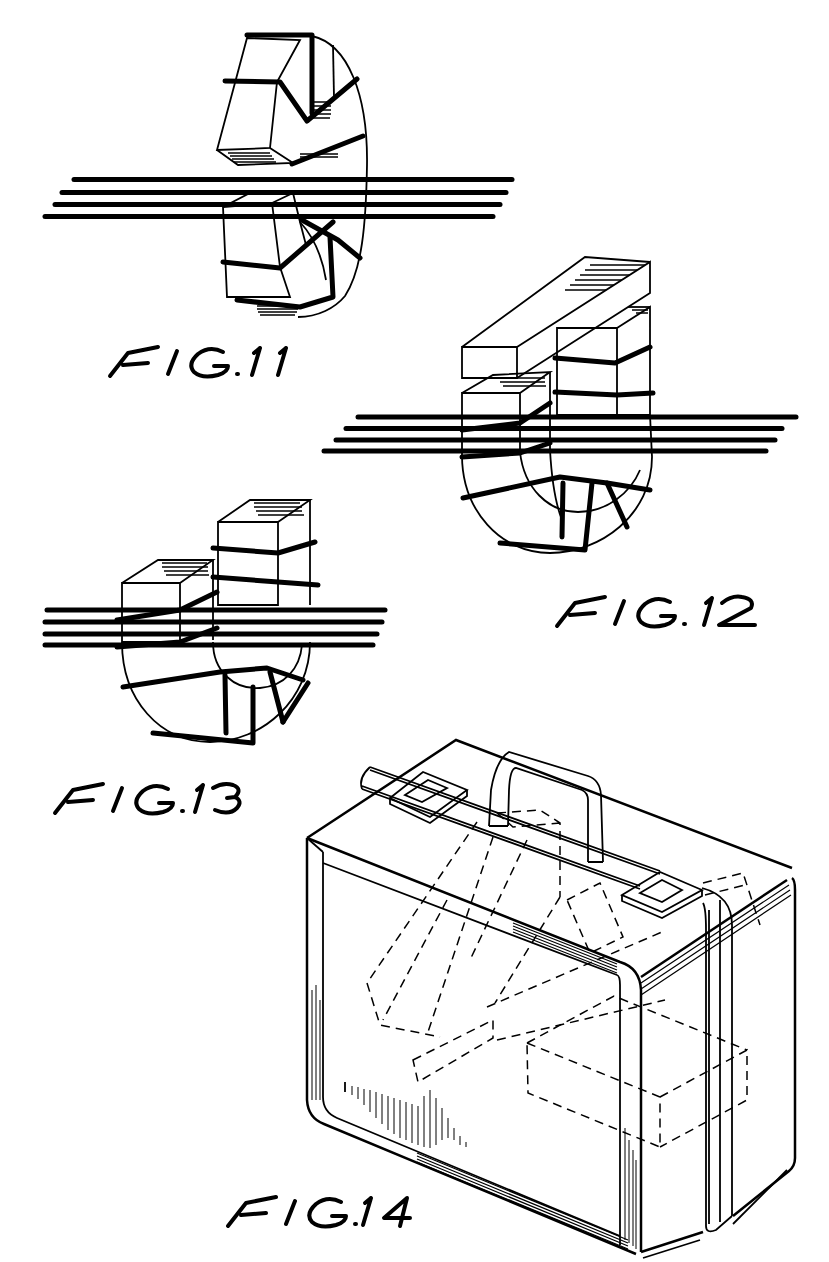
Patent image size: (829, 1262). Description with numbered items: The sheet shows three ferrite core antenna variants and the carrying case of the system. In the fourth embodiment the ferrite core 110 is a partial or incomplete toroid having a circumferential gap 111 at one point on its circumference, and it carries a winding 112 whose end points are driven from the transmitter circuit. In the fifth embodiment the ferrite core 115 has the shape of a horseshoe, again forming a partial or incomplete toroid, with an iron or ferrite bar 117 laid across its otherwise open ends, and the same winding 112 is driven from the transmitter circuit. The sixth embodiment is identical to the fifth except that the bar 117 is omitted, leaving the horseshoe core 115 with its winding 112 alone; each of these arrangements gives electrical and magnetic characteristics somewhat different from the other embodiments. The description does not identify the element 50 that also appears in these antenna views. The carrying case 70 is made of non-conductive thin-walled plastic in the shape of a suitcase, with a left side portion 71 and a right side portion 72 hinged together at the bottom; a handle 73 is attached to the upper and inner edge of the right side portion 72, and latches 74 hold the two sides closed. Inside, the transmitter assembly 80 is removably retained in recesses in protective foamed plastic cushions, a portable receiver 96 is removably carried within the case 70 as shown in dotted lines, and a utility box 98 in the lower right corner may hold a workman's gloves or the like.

In FIG. 11, the cable conductors 50 is at (116, 176).
In FIG. 12, the cable conductors 50 is at (726, 410).
In FIG. 13, the cable conductors 50 is at (63, 603).
In FIG. 11, the ferrite core 110 is at (332, 54).
In FIG. 11, the circumferential gap 111 is at (239, 160).
In FIG. 11, the winding 112 is at (368, 133).
In FIG. 12, the winding 112 is at (628, 499).
In FIG. 13, the winding 112 is at (140, 700).
In FIG. 12, the ferrite core 115 is at (647, 330).
In FIG. 13, the ferrite core 115 is at (307, 562).
In FIG. 12, the iron or ferrite bar 117 is at (632, 258).
In FIG. 14, the case 70 is at (306, 1031).
In FIG. 14, the left side portion 71 is at (507, 1158).
In FIG. 14, the right side portion 72 is at (742, 858).
In FIG. 14, the handle 73 is at (553, 768).
In FIG. 14, the latches 74 is at (418, 775).
In FIG. 14, the transmitter assembly 80 is at (386, 950).
In FIG. 14, the portable receiver 96 is at (476, 1057).
In FIG. 14, the utility box 98 is at (570, 1110).